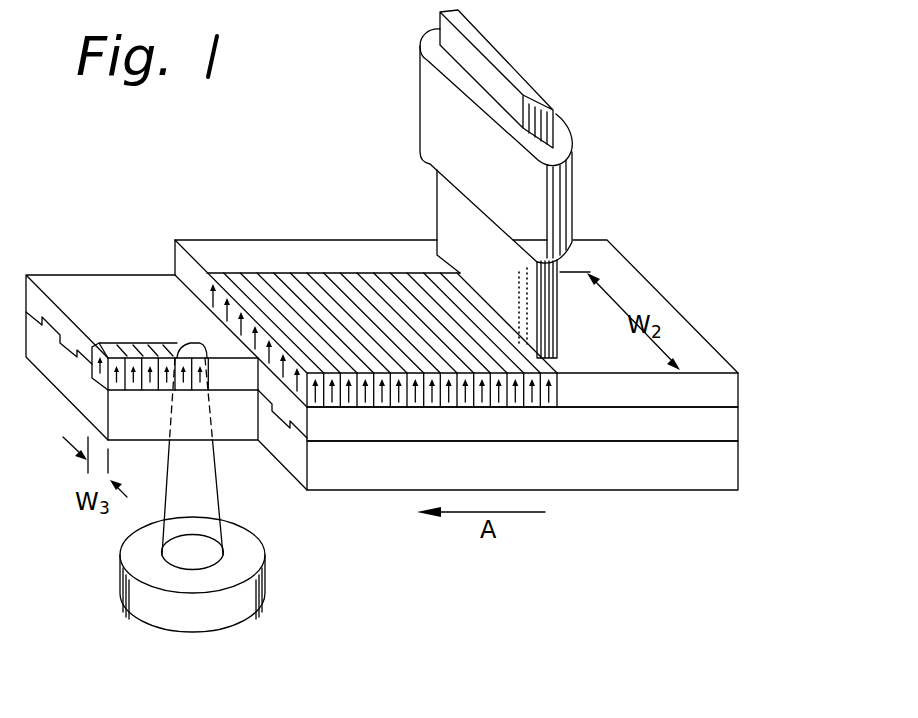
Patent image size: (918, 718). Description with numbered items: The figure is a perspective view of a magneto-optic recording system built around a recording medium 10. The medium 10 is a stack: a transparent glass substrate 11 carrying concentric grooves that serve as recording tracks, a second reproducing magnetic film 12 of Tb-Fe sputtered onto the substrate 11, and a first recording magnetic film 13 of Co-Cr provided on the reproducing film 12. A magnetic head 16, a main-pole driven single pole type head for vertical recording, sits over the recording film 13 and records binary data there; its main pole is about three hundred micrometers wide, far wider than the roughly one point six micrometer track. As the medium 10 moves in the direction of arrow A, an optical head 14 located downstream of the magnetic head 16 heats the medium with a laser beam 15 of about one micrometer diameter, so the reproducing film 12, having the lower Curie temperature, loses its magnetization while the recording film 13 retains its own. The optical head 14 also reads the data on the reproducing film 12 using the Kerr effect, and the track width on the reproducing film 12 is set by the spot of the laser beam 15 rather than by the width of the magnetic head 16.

The recording medium 10 is at (675, 493).
The substrate 11 is at (738, 466).
The second reproducing magnetic film 12 is at (738, 424).
The first recording magnetic film 13 is at (738, 386).
The optical head 14 is at (264, 598).
The laser beam 15 is at (220, 493).
The magnetic head 16 is at (532, 79).